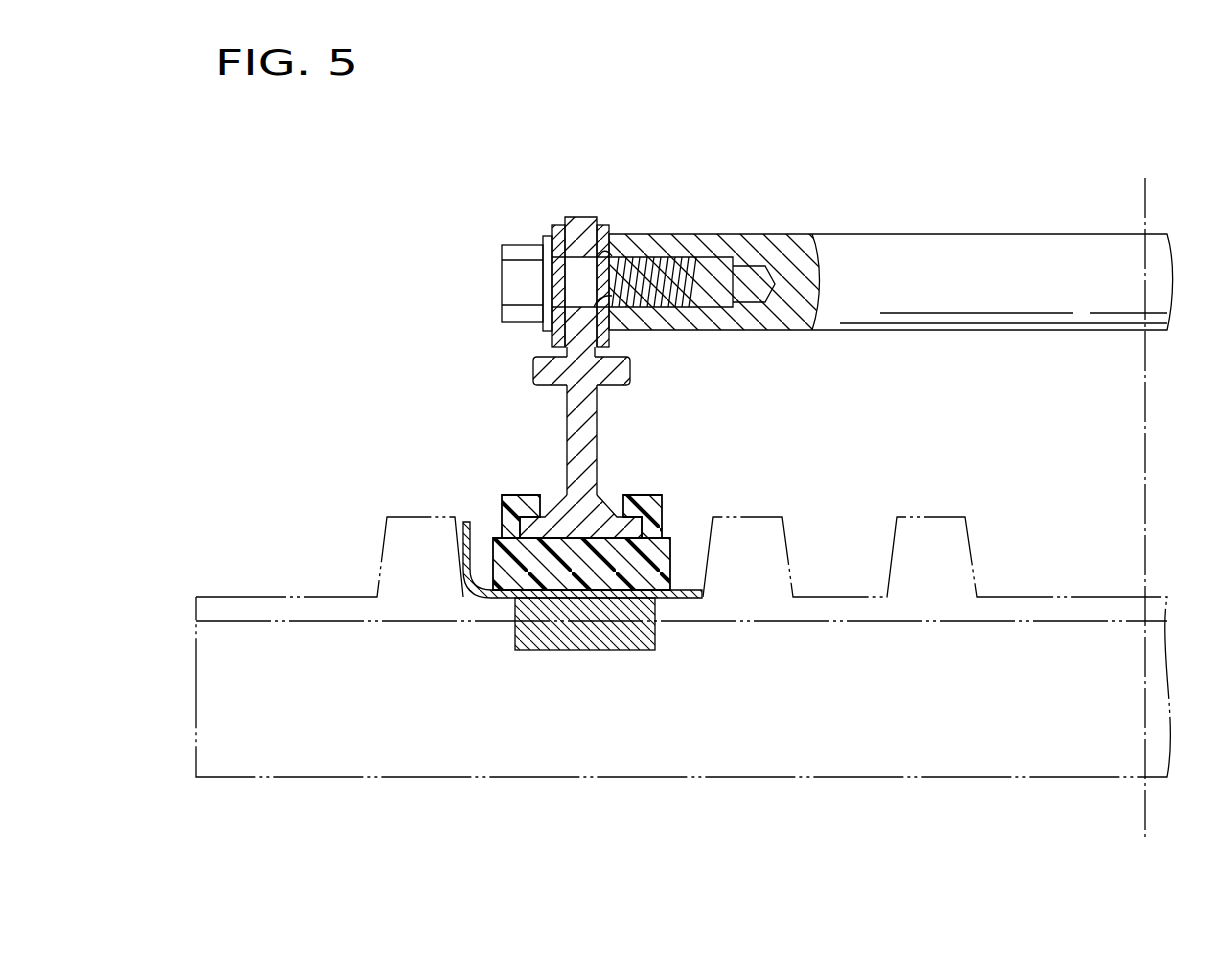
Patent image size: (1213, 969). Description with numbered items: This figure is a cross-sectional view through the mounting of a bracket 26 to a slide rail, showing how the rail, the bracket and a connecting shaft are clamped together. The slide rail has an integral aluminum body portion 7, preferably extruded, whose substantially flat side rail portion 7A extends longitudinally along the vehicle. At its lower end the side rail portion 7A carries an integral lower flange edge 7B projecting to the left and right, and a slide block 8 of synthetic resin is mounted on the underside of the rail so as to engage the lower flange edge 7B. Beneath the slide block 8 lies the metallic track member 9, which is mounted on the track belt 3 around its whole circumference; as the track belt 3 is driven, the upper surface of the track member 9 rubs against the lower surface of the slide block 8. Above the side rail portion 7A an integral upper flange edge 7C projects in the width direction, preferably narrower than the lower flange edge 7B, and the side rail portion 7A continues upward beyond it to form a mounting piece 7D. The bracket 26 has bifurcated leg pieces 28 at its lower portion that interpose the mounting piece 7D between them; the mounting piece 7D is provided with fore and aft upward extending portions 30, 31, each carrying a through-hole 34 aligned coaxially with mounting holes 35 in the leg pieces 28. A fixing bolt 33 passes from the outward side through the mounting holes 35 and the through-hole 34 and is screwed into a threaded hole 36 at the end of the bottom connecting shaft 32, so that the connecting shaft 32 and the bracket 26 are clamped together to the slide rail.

The track belt 3 is at (918, 766).
The body portion 7 is at (585, 470).
The side rail portion 7A is at (593, 455).
The lower flange edge 7B is at (577, 523).
The upper flange edge 7C is at (535, 372).
The mounting piece 7D is at (590, 239).
The slide block 8 is at (505, 578).
The track member 9 is at (632, 650).
The bracket 26 is at (603, 222).
The leg pieces 28 is at (555, 227).
The fore upward extending portion 30 is at (581, 282).
The aft upward extending portion 31 is at (582, 222).
The bottom connecting shaft 32 is at (988, 243).
The fixing bolt 33 is at (508, 284).
The through-hole 34 is at (628, 292).
The mounting hole 35 is at (545, 265).
The threaded hole 36 is at (690, 268).